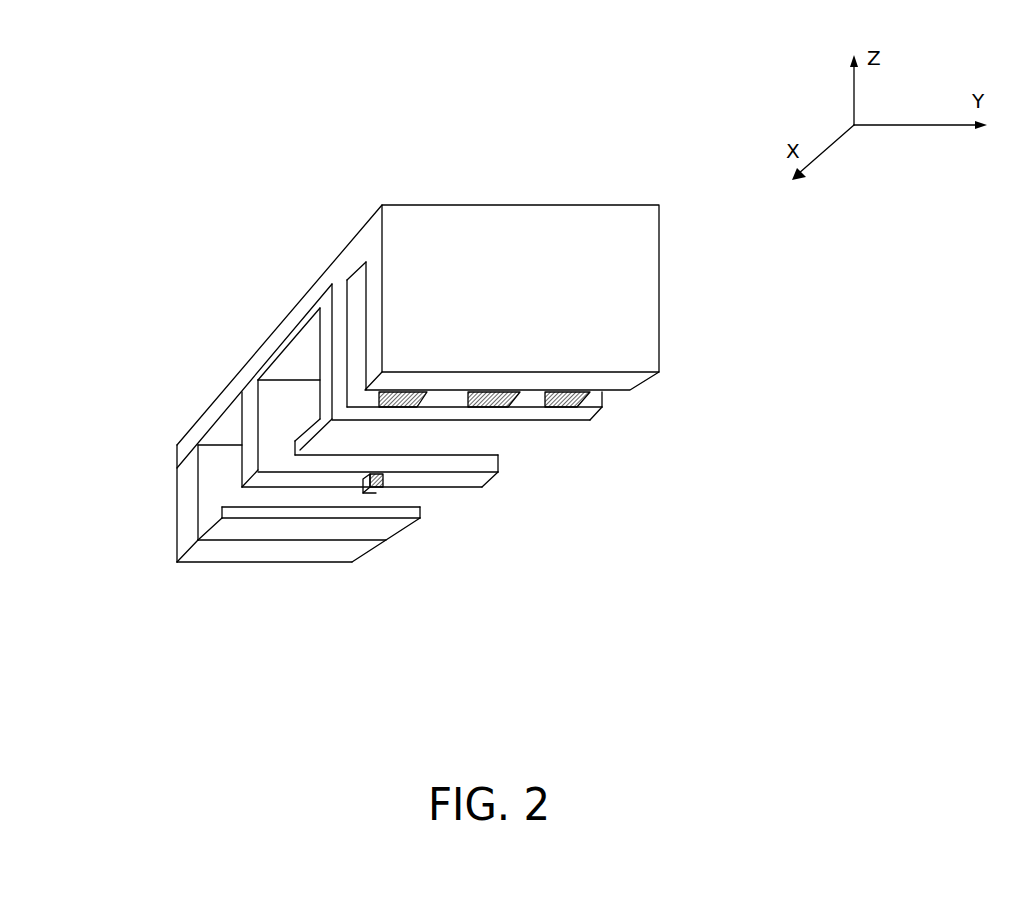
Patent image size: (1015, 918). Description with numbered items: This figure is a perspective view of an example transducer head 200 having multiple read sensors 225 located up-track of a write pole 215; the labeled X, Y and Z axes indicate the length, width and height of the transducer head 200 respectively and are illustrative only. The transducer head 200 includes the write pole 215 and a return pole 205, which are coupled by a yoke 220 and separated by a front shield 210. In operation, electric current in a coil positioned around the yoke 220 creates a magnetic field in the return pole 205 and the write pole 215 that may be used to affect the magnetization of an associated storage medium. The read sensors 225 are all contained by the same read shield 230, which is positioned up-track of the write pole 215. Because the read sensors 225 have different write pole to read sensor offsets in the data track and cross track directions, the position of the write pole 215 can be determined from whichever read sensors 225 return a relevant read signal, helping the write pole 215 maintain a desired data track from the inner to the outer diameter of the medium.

The transducer head 200 is at (226, 77).
The return pole 205 is at (237, 555).
The front shield 210 is at (327, 528).
The write pole 215 is at (373, 490).
The yoke 220 is at (463, 487).
The read sensors 225 is at (405, 401).
The read shield 230 is at (422, 232).